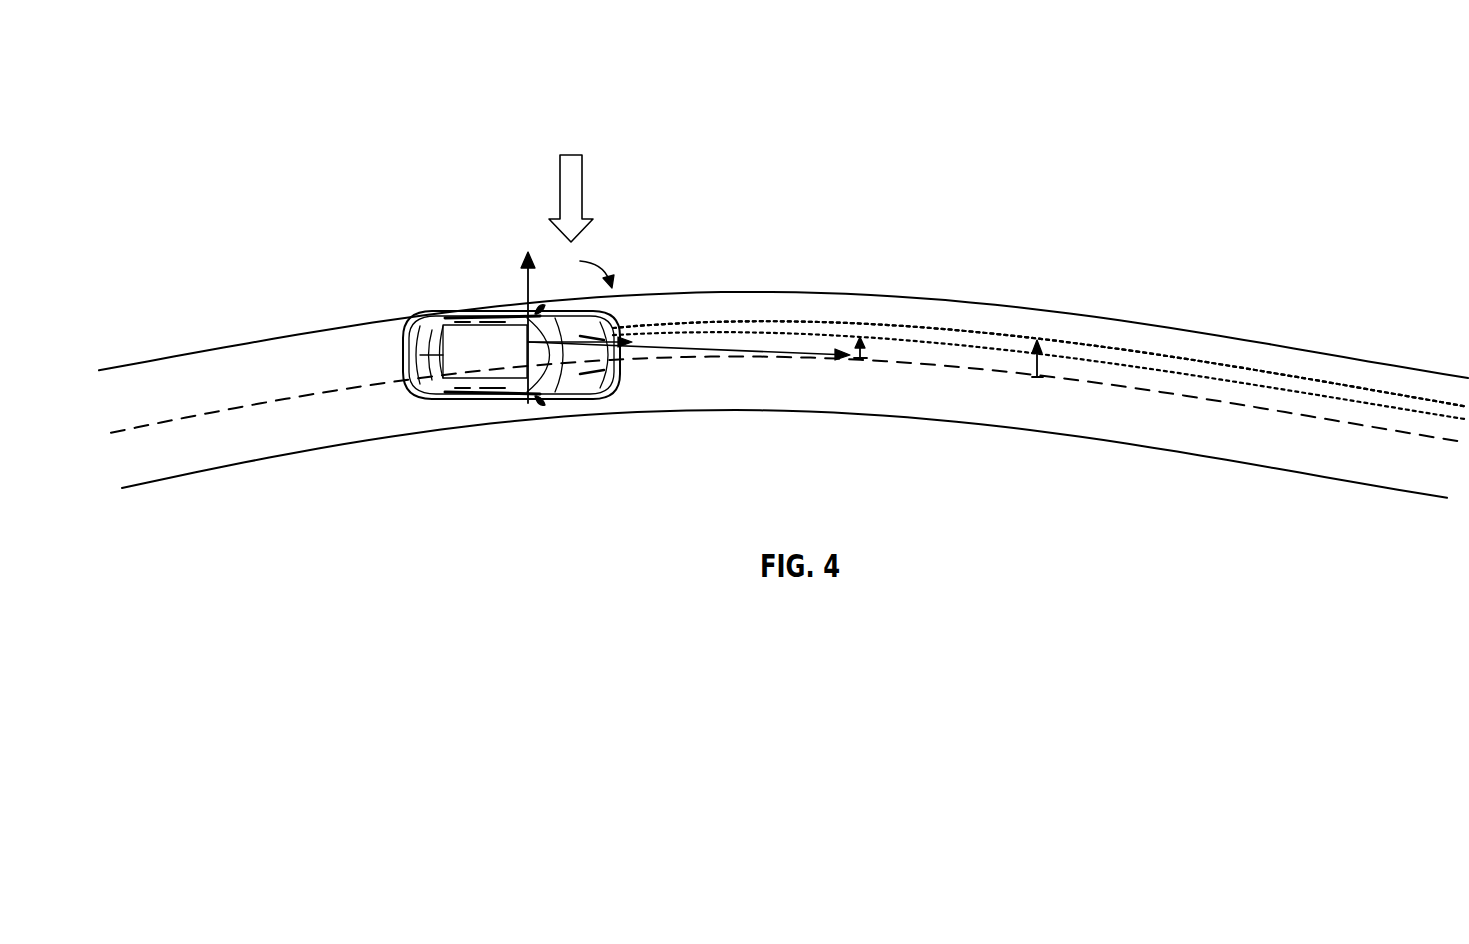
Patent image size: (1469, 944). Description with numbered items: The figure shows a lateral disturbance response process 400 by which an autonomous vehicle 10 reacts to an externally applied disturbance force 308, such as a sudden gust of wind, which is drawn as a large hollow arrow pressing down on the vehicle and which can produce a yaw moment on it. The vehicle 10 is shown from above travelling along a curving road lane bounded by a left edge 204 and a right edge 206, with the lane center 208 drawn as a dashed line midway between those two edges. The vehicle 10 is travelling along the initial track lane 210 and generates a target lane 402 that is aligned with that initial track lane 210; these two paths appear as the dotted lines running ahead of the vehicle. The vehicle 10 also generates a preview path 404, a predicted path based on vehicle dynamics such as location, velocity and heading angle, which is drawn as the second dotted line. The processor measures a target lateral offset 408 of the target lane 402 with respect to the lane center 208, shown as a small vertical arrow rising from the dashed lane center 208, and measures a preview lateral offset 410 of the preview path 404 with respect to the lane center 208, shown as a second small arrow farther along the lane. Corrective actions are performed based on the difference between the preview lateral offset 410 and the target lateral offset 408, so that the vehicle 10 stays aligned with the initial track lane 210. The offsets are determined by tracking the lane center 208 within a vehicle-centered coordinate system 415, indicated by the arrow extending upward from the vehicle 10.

The lateral disturbance response process 400 is at (1095, 80).
The autonomous vehicle 10 is at (430, 317).
The left edge 204 is at (265, 355).
The right edge 206 is at (278, 445).
The lane center 208 is at (1360, 427).
The initial track lane 210 is at (1415, 392).
The target lane 402 is at (1353, 388).
The preview path 404 is at (1274, 389).
The disturbance force 308 is at (582, 185).
The vehicle-centered coordinate system 415 is at (523, 285).
The target lateral offset 408 is at (863, 356).
The preview lateral offset 410 is at (1040, 363).